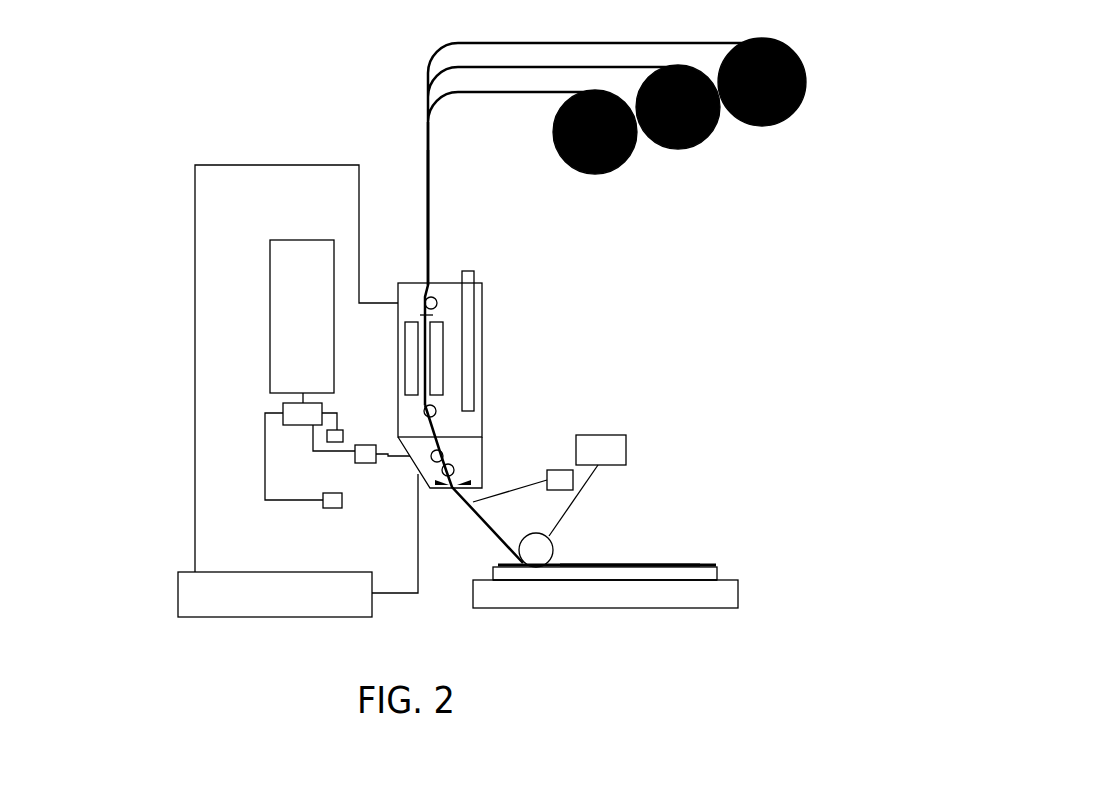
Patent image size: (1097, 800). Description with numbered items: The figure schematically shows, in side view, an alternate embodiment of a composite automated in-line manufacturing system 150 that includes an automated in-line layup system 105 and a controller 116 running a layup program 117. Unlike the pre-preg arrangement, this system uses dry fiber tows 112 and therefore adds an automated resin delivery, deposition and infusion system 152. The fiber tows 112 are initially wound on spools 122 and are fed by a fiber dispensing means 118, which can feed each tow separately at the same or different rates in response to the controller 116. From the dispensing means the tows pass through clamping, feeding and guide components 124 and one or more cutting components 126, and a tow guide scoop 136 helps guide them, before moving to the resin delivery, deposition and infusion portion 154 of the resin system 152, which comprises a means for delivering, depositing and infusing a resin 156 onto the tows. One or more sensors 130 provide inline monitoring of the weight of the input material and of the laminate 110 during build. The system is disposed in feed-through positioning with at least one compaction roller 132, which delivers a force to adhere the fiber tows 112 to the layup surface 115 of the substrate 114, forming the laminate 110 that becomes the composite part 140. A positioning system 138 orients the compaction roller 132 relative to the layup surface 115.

The composite automated in-line manufacturing system 150 is at (308, 54).
The spools 122 is at (797, 51).
The fiber tows 112 is at (428, 140).
The automated in-line layup system 105 is at (540, 362).
The fiber dispensing means 118 is at (482, 303).
The clamping, feeding and guide components 124 is at (436, 294).
The resin delivery, deposition and infusion portion 154 is at (482, 473).
The laminate 110 is at (670, 565).
The automated resin delivery, deposition and infusion system 152 is at (307, 368).
The resin 156 is at (303, 240).
The cutting components 126 is at (420, 477).
The tow guide scoop 136 is at (344, 506).
The controller 116 is at (178, 593).
The layup program 117 is at (275, 595).
The sensors 130 is at (550, 470).
The positioning system 138 is at (626, 450).
The compaction roller 132 is at (553, 545).
The composite part 140 is at (713, 567).
The layup surface 115 is at (733, 580).
The substrate 114 is at (738, 595).